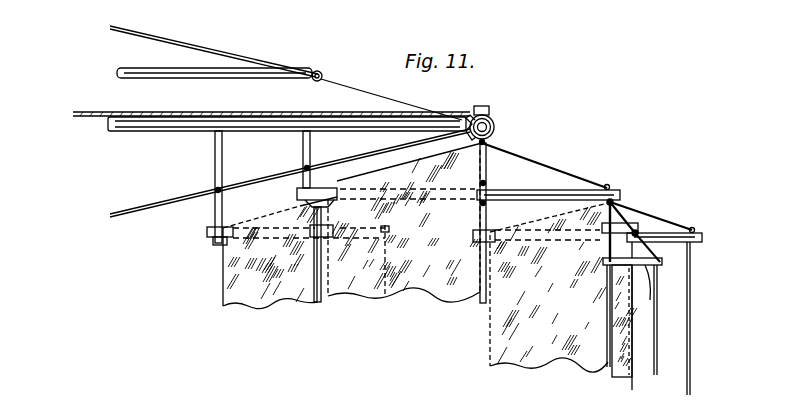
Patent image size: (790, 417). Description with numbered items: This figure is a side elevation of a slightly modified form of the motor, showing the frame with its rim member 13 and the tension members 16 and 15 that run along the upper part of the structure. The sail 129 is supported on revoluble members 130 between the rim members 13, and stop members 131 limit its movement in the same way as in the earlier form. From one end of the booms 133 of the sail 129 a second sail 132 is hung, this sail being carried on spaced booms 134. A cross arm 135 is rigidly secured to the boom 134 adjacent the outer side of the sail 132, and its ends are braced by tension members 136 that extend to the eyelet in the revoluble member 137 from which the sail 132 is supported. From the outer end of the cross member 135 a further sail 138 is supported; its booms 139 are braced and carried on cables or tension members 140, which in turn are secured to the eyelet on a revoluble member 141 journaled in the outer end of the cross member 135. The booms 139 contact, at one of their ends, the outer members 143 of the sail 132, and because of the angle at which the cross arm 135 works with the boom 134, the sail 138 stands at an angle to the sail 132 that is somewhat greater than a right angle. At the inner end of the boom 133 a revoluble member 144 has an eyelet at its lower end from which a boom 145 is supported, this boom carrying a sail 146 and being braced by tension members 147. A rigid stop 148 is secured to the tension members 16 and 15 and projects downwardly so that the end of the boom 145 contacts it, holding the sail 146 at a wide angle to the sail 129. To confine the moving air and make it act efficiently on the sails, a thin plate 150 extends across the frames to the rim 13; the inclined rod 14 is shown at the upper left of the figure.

The rim member 13 is at (496, 126).
The rod 14 is at (203, 50).
The tension member 15 is at (114, 215).
The tension member 16 is at (190, 120).
The sail 129 is at (417, 288).
The revoluble member 130 is at (481, 108).
The stop member 131 is at (303, 155).
The sail 132 is at (540, 363).
The boom 133 is at (520, 197).
The boom 134 is at (702, 237).
The cross arm 135 is at (610, 230).
The tension member 136 is at (618, 208).
The revoluble member 137 is at (622, 201).
The sail 138 is at (622, 330).
The boom 139 is at (652, 305).
The tension member 140 is at (645, 263).
The revoluble member 141 is at (638, 231).
The outer member 143 is at (606, 303).
The revoluble member 144 is at (318, 187).
The boom 145 is at (209, 239).
The sail 146 is at (265, 294).
The tension member 147 is at (282, 213).
The rigid stop 148 is at (215, 172).
The thin plate 150 is at (343, 114).